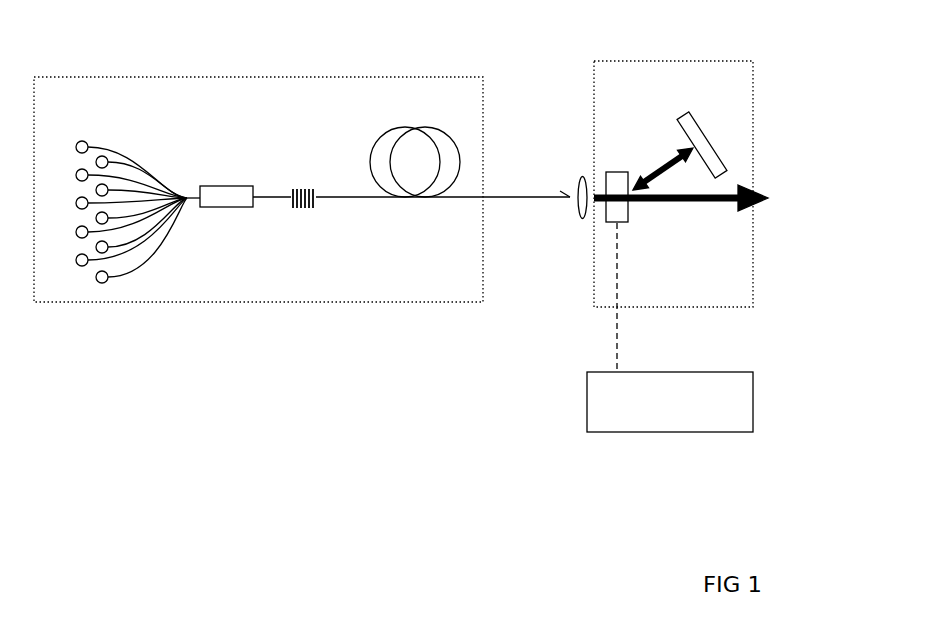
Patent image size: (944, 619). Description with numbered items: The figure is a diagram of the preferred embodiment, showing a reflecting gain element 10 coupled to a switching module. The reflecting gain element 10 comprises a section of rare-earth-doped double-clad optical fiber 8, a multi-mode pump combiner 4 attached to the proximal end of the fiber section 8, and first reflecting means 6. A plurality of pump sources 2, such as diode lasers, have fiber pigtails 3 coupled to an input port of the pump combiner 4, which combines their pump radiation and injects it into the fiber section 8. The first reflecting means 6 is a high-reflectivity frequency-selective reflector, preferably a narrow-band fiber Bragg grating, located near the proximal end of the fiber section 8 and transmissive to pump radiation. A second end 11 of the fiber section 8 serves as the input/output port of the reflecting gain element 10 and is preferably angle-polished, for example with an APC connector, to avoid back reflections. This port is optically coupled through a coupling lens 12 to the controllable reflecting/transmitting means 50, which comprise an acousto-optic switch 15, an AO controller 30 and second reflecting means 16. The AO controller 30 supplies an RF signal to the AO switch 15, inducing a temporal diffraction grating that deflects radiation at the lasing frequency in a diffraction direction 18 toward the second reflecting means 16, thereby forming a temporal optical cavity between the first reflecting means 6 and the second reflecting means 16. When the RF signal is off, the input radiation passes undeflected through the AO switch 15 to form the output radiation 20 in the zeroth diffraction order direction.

The reflecting gain element 10 is at (132, 73).
The pump sources 2 is at (82, 266).
The fiber pigtails 3 is at (112, 260).
The multi-mode pump combiner 4 is at (212, 183).
The first reflecting means 6 is at (310, 215).
The double-clad optical fiber section 8 is at (415, 203).
The second end of the doped fiber section 11 is at (565, 202).
The coupling lens 12 is at (575, 228).
The acousto-optic switch 15 is at (613, 170).
The second reflecting means 16 is at (722, 165).
The diffraction direction 18 is at (660, 160).
The output radiation 20 is at (662, 200).
The AO controller 30 is at (753, 398).
The controllable reflecting/transmitting means 50 is at (655, 59).